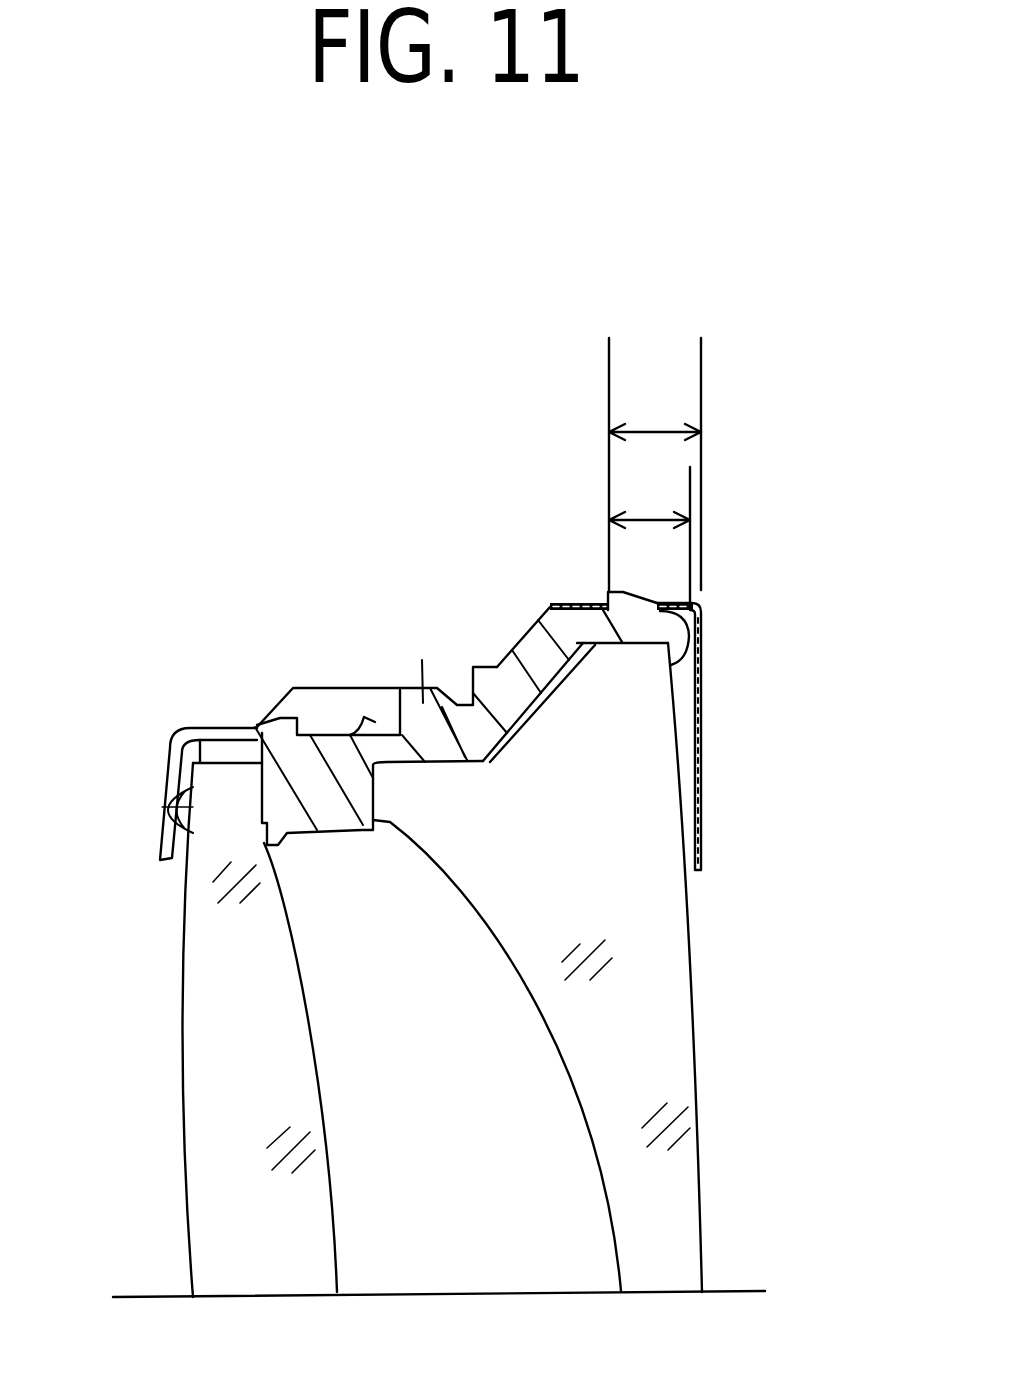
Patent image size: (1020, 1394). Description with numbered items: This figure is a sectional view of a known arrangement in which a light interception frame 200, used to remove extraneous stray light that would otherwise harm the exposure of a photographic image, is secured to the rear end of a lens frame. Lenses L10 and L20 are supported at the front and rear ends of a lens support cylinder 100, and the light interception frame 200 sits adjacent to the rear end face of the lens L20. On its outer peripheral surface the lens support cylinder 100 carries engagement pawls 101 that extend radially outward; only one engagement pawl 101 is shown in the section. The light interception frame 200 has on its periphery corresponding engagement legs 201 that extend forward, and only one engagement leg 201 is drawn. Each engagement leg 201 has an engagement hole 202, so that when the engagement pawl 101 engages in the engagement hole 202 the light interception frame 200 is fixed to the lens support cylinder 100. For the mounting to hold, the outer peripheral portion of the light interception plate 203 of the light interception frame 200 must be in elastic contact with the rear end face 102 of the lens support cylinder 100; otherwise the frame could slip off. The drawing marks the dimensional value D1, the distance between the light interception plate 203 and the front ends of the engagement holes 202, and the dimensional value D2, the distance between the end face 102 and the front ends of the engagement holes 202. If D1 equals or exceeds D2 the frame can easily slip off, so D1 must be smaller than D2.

The lens support cylinder 100 is at (427, 687).
The engagement pawl 101 is at (625, 592).
The end face 102 is at (700, 628).
The light interception frame 200 is at (743, 788).
The engagement leg 201 is at (565, 603).
The engagement hole 202 is at (660, 600).
The light interception plate 203 is at (700, 710).
The lens L10 is at (237, 1142).
The lens L20 is at (667, 1207).
The dimensional value D1 is at (650, 430).
The dimensional value D2 is at (650, 517).